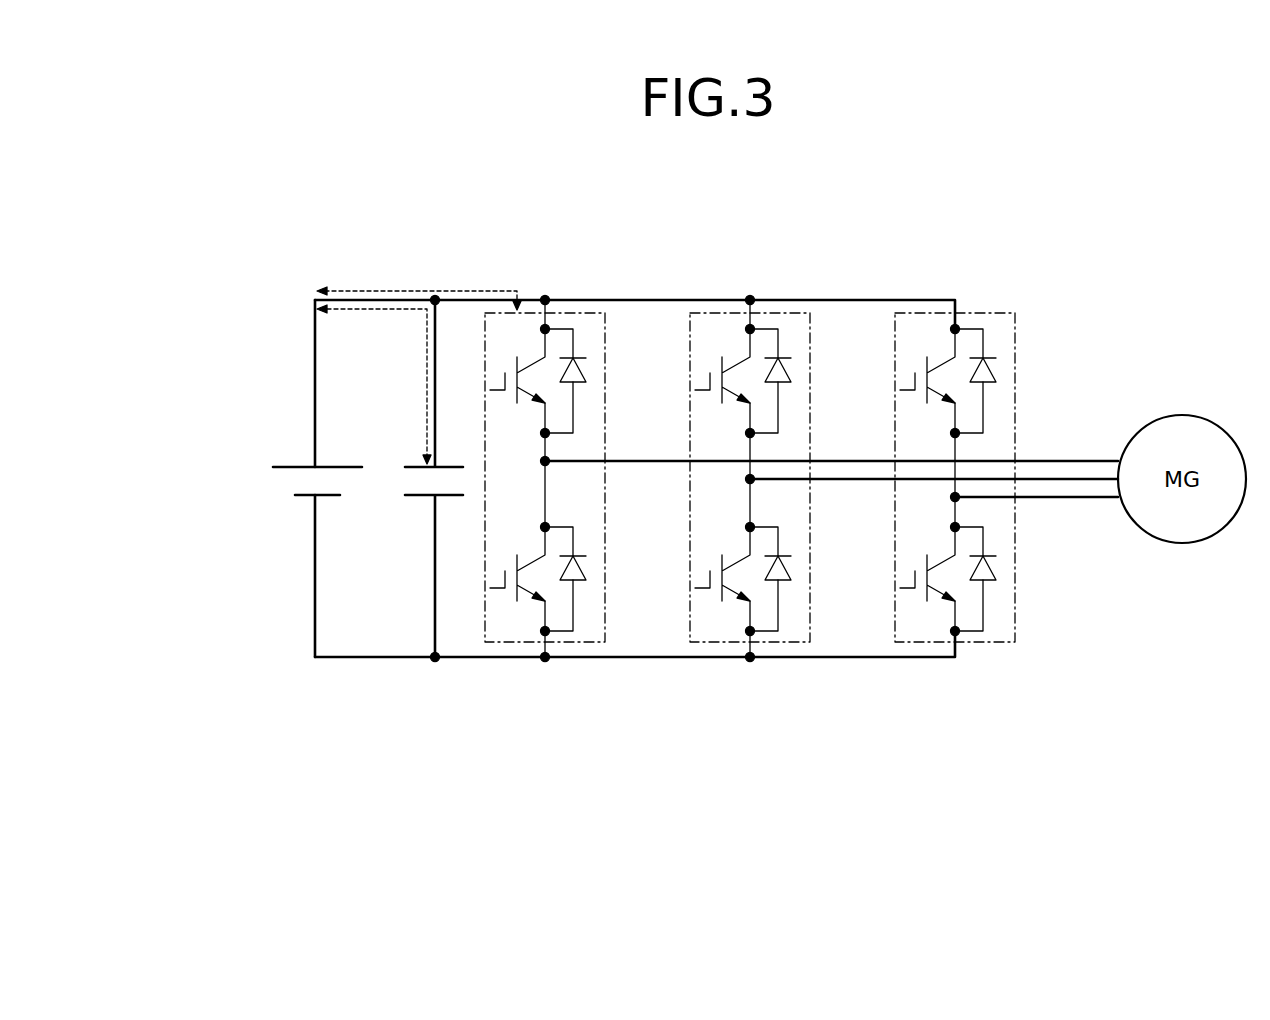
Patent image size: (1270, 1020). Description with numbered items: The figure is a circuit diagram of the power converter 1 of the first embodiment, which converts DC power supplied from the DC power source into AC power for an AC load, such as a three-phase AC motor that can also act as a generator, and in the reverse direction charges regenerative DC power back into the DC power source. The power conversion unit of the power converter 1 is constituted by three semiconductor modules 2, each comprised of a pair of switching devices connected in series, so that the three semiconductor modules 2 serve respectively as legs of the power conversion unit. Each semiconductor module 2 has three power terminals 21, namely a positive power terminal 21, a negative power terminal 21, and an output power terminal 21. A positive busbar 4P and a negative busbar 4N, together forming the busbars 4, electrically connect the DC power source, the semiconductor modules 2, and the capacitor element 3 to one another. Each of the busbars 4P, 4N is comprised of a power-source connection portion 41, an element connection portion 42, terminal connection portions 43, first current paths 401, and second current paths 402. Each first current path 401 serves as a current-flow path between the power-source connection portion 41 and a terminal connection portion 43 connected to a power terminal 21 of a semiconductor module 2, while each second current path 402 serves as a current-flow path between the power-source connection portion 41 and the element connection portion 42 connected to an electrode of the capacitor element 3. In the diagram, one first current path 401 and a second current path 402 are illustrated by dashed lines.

The power converter 1 is at (670, 477).
The semiconductor module 2 is at (755, 438).
The power terminal 21 is at (548, 299).
The capacitor element 3 is at (300, 480).
The busbar 4 is at (635, 499).
The positive busbar 4P is at (647, 300).
The negative busbar 4N is at (462, 660).
The power-source connection portion 41 is at (315, 298).
The element connection portion 42 is at (432, 503).
The terminal connection portion 43 is at (545, 298).
The first current path 401 is at (419, 285).
The second current path 402 is at (374, 384).